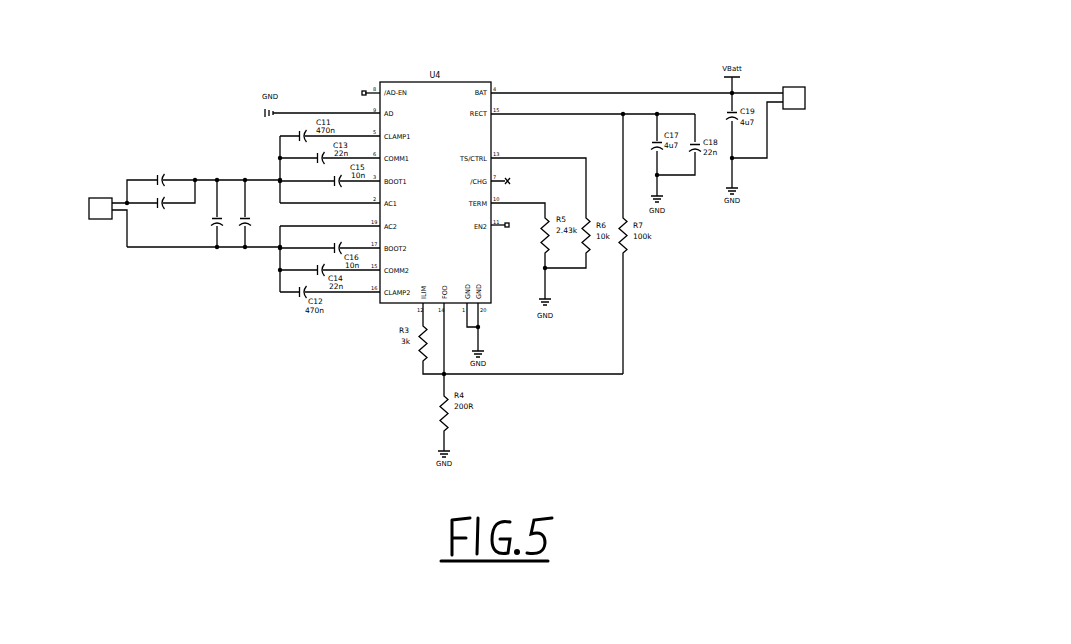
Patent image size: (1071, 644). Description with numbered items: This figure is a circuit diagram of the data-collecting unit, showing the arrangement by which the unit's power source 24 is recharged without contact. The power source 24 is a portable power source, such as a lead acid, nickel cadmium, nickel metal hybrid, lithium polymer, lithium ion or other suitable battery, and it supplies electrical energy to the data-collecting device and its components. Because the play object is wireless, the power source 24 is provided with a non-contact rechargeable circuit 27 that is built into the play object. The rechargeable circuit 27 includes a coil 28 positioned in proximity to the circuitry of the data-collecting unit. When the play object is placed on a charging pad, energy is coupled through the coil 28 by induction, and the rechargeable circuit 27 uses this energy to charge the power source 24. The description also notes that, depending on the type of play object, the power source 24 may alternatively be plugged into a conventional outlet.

The power source 24 is at (815, 116).
The non-contact rechargeable circuit 27 is at (238, 156).
The coil 28 is at (95, 170).